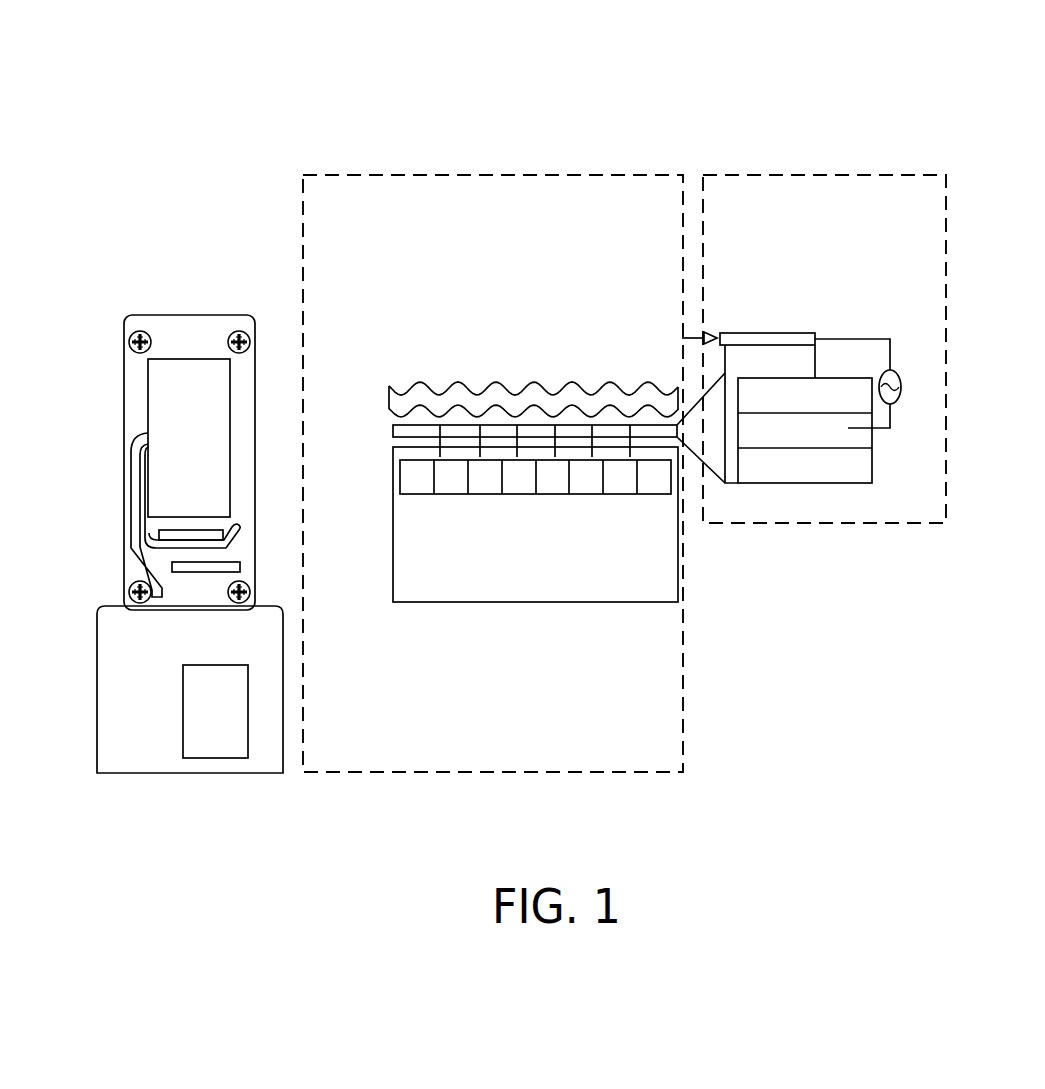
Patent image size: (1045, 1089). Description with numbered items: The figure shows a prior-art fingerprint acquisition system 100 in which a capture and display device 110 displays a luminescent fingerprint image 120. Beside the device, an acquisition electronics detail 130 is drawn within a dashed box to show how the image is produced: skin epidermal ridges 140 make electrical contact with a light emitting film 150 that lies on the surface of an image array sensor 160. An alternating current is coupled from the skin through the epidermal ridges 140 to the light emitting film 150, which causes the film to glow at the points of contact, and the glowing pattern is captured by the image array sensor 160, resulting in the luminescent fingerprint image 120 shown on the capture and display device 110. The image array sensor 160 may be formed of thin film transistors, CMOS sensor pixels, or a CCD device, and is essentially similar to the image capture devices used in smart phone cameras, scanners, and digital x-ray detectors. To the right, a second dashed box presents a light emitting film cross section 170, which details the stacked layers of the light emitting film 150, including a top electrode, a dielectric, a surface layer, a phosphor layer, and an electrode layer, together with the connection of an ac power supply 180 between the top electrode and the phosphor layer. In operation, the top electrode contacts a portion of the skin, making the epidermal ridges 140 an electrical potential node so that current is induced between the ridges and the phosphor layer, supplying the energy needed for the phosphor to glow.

The fingerprint acquisition system 100 is at (138, 186).
The capture and display device 110 is at (247, 322).
The luminescent fingerprint image 120 is at (124, 368).
The acquisition electronics detail 130 is at (512, 175).
The skin epidermal ridges 140 is at (440, 393).
The light emitting film 150 is at (393, 432).
The image array sensor 160 is at (595, 601).
The light emitting film cross section 170 is at (802, 175).
The ac power supply 180 is at (890, 370).